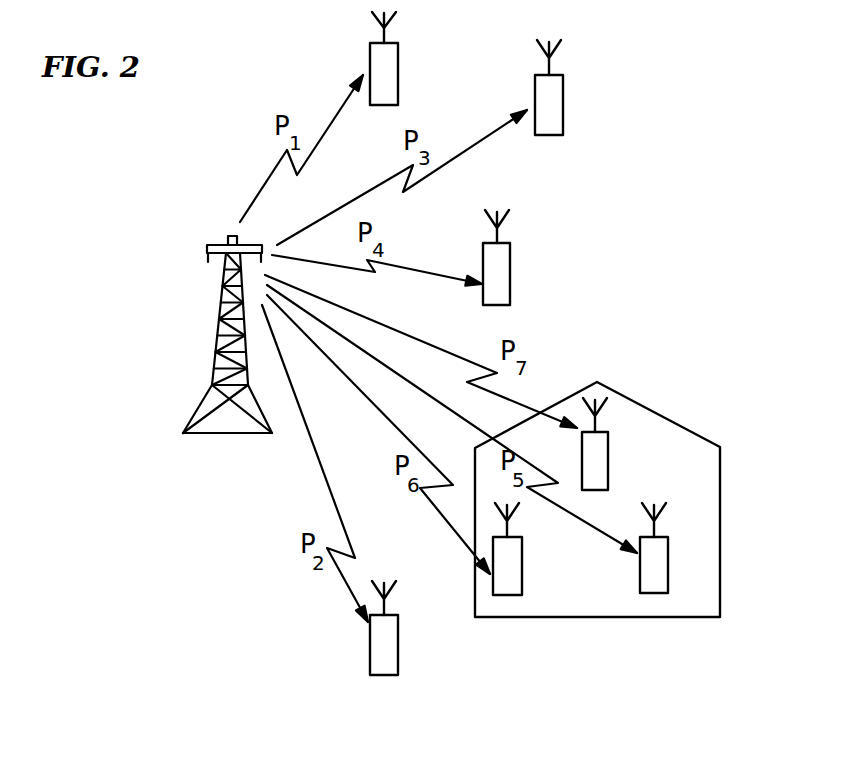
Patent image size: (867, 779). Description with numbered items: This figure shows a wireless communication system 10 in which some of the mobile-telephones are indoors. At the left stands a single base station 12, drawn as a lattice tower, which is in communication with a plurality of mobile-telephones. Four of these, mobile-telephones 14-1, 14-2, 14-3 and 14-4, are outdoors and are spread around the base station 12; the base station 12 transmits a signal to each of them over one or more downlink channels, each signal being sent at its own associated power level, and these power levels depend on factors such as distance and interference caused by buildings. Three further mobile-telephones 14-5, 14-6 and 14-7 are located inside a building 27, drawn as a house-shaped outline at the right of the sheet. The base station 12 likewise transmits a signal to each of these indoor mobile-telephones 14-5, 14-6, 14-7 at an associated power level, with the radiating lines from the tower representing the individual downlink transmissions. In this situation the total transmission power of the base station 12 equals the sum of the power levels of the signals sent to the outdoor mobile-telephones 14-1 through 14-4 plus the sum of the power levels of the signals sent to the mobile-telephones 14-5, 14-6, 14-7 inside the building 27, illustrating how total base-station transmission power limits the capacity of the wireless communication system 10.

The wireless communication system 10 is at (103, 135).
The base station 12 is at (215, 360).
The mobile-telephone 14-1 is at (398, 58).
The mobile-telephone 14-2 is at (398, 641).
The mobile-telephone 14-3 is at (563, 100).
The mobile-telephone 14-4 is at (510, 270).
The mobile-telephone 14-5 is at (668, 568).
The mobile-telephone 14-6 is at (522, 590).
The mobile-telephone 14-7 is at (608, 465).
The building 27 is at (634, 400).